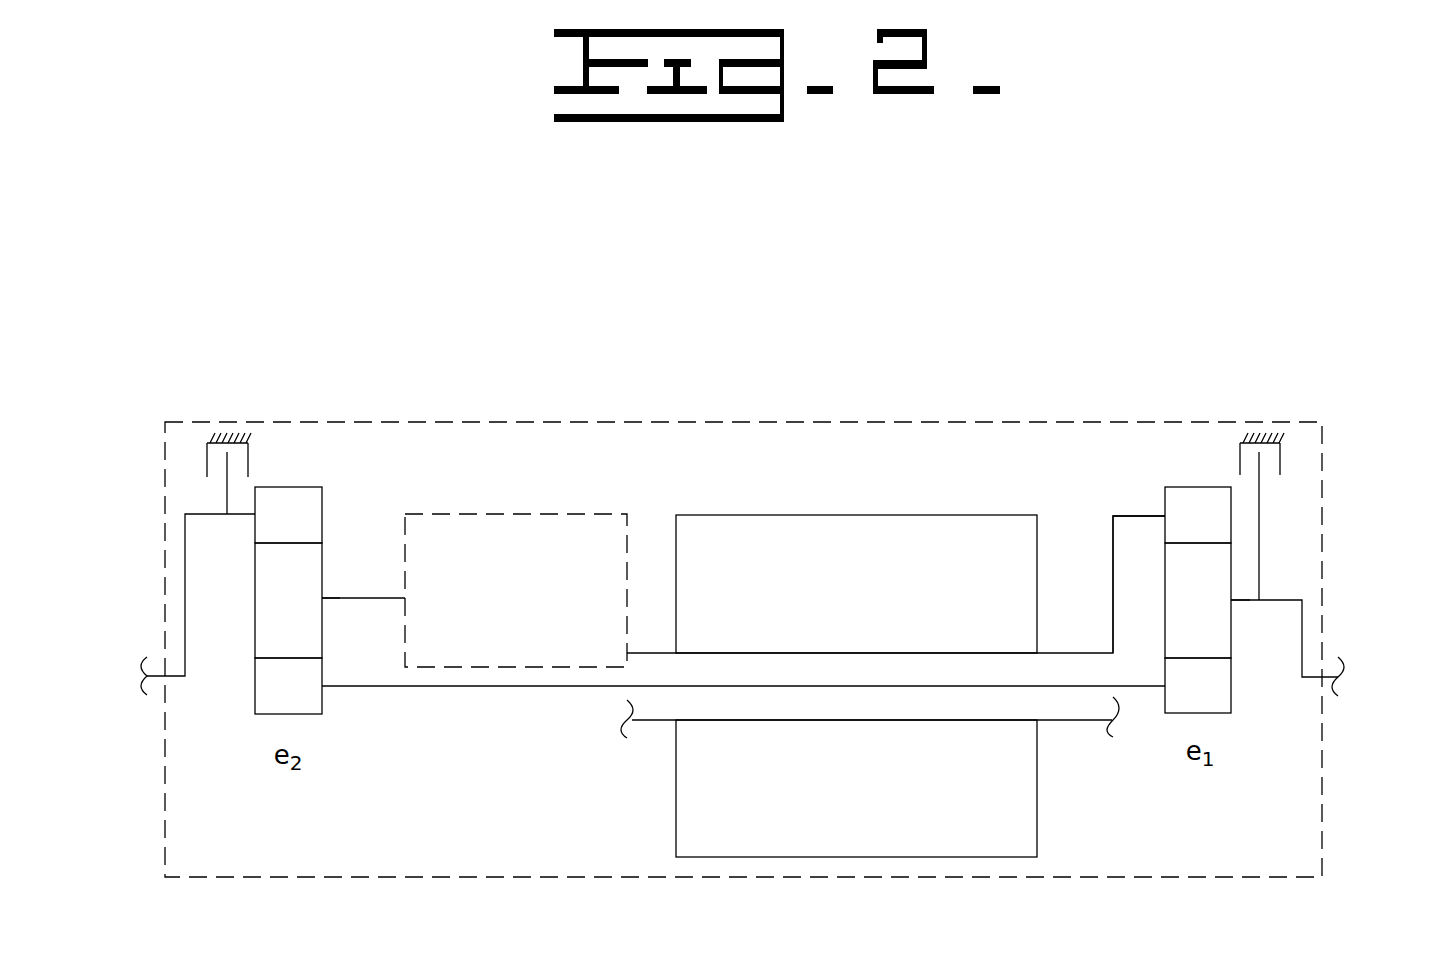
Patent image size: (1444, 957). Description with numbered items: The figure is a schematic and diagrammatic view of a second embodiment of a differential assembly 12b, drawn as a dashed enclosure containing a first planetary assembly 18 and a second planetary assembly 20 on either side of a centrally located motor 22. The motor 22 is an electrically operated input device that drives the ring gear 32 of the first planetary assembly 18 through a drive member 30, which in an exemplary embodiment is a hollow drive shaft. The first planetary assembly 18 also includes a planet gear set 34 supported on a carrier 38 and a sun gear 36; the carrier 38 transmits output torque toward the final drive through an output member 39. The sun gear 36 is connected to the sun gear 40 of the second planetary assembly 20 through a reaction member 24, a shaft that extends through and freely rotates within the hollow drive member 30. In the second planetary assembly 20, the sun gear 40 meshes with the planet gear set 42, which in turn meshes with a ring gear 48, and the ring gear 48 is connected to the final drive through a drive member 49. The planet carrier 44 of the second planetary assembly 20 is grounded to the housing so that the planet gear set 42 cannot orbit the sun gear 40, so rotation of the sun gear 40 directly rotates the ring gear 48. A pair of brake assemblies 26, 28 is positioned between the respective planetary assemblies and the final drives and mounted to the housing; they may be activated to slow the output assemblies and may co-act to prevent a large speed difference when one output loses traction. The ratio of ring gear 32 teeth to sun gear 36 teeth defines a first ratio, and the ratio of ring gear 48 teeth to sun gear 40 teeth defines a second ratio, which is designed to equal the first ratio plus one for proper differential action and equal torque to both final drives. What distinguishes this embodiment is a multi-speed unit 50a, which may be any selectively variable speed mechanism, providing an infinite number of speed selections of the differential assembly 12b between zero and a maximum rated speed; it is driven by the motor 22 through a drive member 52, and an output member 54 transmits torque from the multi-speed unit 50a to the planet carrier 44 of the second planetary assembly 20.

The differential assembly 12b is at (800, 412).
The first planetary assembly 18 is at (1153, 571).
The second planetary assembly 20 is at (308, 542).
The motor 22 is at (778, 515).
The reaction member 24 is at (520, 688).
The brake assembly 26 is at (1305, 433).
The brake assembly 28 is at (188, 447).
The drive member 30 is at (1112, 534).
The ring gear 32 is at (1183, 527).
The planet gear set 34 is at (1183, 613).
The sun gear 36 is at (1183, 698).
The carrier 38 is at (1232, 601).
The output member 39 is at (1302, 617).
The sun gear 40 is at (272, 698).
The planet gear set 42 is at (272, 612).
The carrier 44 is at (323, 599).
The ring gear 48 is at (272, 527).
The drive member 49 is at (185, 600).
The multi-speed unit 50a is at (489, 504).
The drive member 52 is at (651, 652).
The output member 54 is at (392, 598).